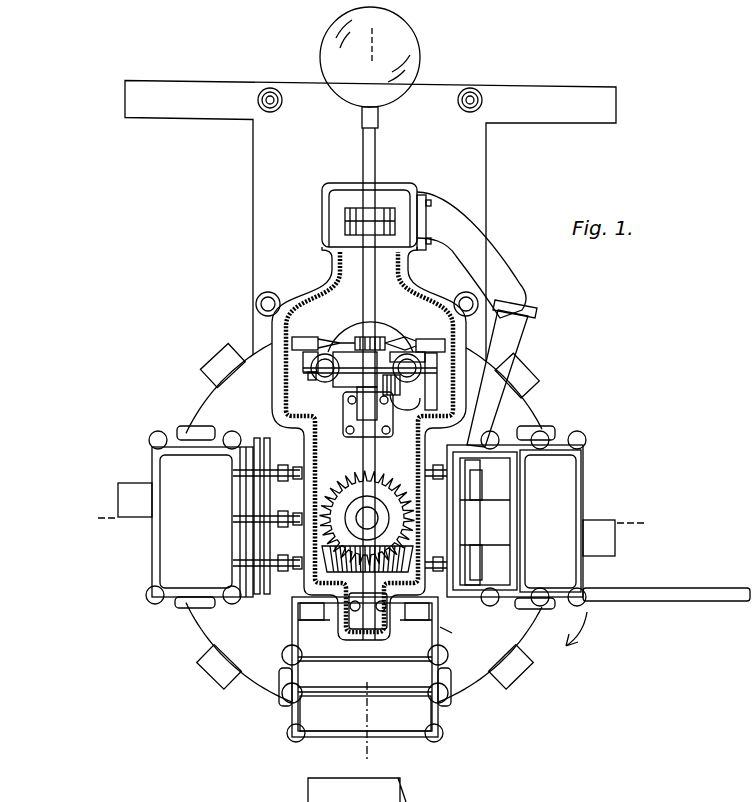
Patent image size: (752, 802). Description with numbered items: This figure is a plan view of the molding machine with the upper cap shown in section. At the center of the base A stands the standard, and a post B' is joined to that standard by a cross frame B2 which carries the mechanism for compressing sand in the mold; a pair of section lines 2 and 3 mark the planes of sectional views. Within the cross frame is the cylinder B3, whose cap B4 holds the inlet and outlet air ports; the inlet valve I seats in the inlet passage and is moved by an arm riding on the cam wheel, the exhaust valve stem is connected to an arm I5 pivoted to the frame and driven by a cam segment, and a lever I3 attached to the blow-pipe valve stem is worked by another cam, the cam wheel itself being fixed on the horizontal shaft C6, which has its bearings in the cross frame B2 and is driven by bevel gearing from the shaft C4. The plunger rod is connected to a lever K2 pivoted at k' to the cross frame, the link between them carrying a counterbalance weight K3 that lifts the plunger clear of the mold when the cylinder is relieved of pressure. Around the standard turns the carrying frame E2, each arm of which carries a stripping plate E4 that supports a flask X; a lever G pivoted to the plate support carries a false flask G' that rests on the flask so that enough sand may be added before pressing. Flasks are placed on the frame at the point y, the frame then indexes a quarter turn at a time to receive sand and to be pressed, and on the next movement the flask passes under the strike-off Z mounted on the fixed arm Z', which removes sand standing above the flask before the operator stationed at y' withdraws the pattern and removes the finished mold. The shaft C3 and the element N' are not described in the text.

The counterbalance weight K3 is at (418, 346).
The lever K2 is at (377, 168).
The section line 3— 3 is at (368, 395).
The section line 2— 2 is at (372, 519).
The post B' is at (369, 411).
The pivot k' is at (359, 225).
The fixed arm Z' is at (471, 255).
The strike-off Z is at (502, 373).
The cylinder B3 is at (370, 328).
The inlet valve I is at (369, 361).
The lever I3 is at (316, 380).
The block N' is at (361, 381).
The cap B4 is at (441, 384).
The arm I5 is at (405, 416).
The cross frame B2 is at (358, 421).
The gear wheel C3 is at (367, 514).
The horizontal shaft C6 is at (367, 509).
The shaft C4 is at (368, 600).
The carrying frame E2 is at (340, 518).
The stripping plate E4 is at (367, 591).
The false flask G' is at (355, 580).
The lever G is at (454, 633).
The flask X is at (152, 548).
The loading point y is at (456, 737).
The operator station y' is at (665, 534).
The base A is at (512, 632).